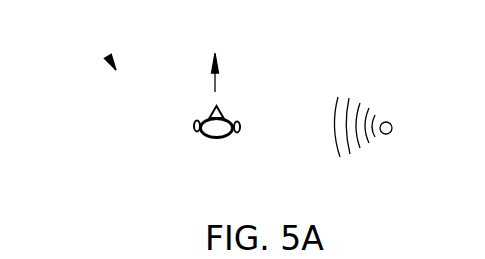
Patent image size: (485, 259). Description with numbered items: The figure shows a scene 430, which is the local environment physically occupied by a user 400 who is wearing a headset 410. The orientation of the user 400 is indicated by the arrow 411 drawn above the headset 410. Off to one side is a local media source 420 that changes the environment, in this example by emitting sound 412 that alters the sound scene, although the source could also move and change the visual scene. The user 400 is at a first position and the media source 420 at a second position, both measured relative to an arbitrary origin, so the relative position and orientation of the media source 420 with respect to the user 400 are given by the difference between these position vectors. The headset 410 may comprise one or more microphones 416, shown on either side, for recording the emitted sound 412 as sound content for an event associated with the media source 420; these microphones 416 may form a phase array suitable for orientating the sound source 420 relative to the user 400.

The user 400 is at (207, 139).
The headset 410 is at (197, 124).
The arrow 411 is at (217, 85).
The sound 412 is at (357, 102).
The microphones 416 is at (199, 122).
The local media source 420 is at (392, 122).
The scene 430 is at (109, 61).